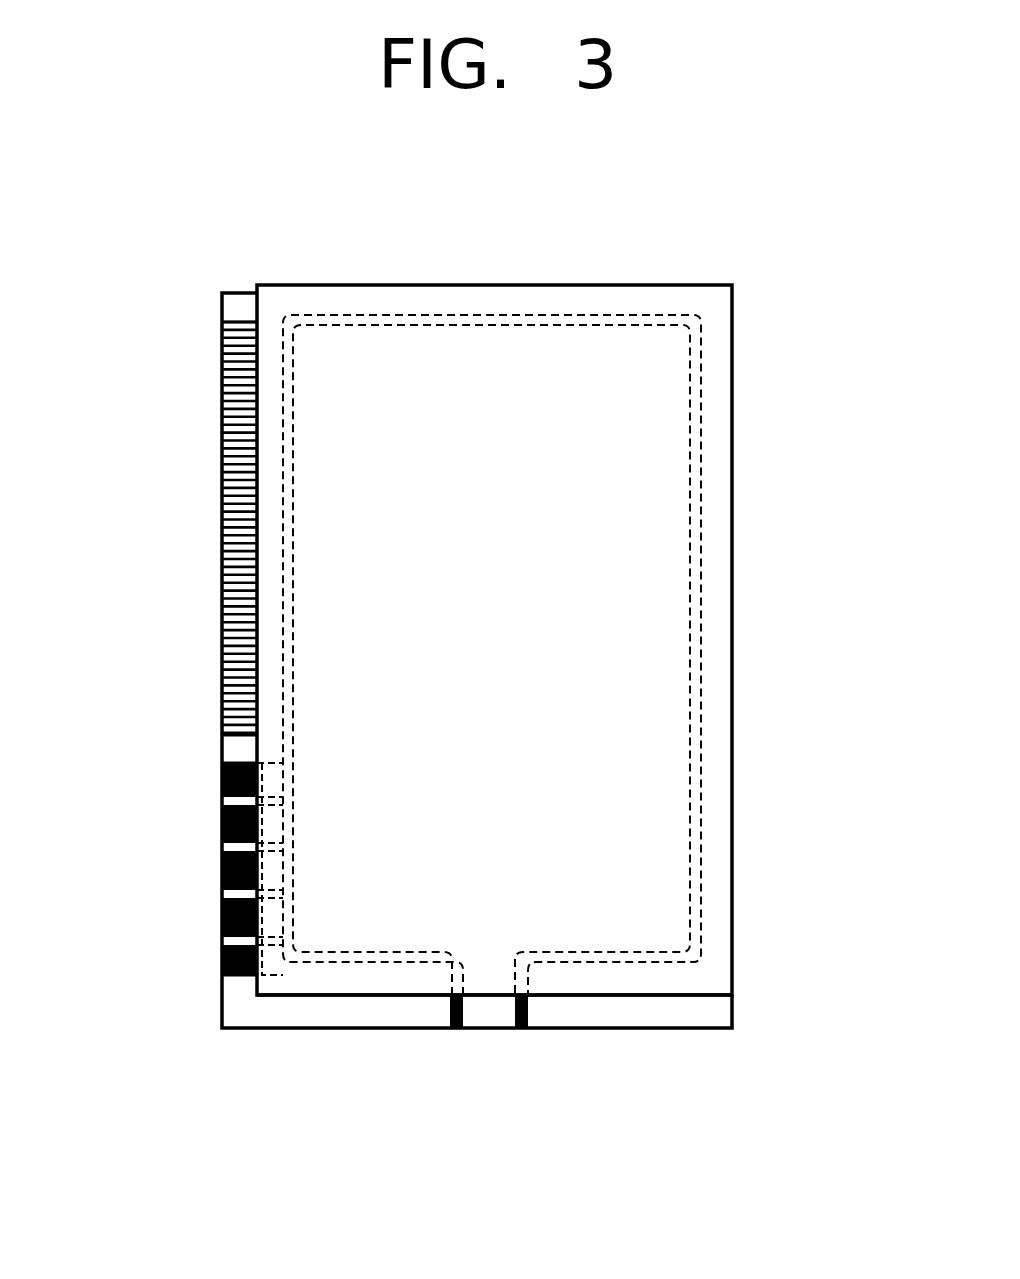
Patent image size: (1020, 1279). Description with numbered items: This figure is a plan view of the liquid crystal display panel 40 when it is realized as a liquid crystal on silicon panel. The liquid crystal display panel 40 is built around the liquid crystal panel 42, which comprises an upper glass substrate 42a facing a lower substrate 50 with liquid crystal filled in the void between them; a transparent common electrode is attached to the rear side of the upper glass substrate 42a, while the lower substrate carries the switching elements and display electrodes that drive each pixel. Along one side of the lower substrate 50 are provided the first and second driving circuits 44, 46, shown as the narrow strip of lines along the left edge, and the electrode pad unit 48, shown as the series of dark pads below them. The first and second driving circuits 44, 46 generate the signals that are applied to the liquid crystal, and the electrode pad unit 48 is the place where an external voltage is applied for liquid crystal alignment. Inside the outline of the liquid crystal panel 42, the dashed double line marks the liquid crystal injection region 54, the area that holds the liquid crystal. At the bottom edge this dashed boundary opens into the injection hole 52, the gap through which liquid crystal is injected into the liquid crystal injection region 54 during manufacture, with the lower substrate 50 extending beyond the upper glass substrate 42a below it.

The liquid crystal display panel 40 is at (788, 468).
The liquid crystal panel 42 is at (503, 668).
The upper glass substrate 42a is at (606, 996).
The first driving circuit 44 is at (154, 527).
The second driving circuit 46 is at (235, 437).
The electrode pad unit 48 is at (212, 765).
The lower substrate 50 is at (700, 1012).
The injection hole 52 is at (485, 1005).
The liquid crystal injection region 54 is at (703, 700).